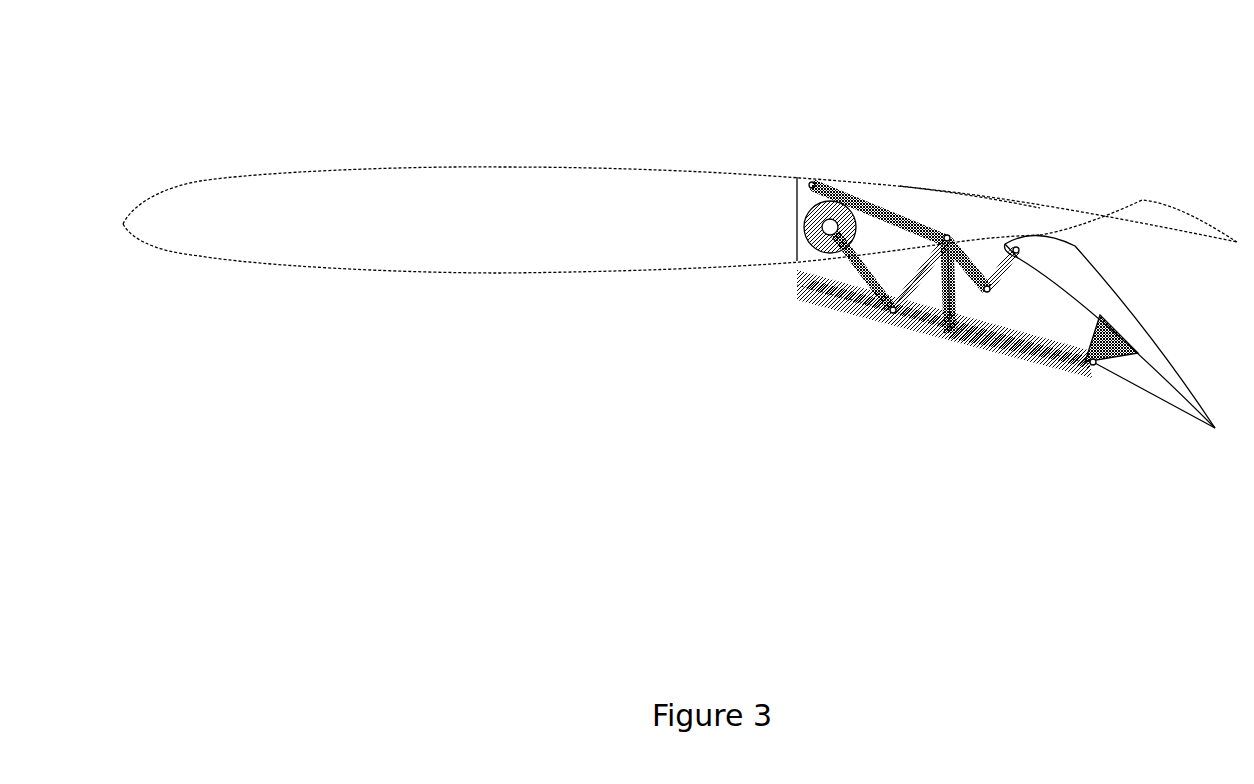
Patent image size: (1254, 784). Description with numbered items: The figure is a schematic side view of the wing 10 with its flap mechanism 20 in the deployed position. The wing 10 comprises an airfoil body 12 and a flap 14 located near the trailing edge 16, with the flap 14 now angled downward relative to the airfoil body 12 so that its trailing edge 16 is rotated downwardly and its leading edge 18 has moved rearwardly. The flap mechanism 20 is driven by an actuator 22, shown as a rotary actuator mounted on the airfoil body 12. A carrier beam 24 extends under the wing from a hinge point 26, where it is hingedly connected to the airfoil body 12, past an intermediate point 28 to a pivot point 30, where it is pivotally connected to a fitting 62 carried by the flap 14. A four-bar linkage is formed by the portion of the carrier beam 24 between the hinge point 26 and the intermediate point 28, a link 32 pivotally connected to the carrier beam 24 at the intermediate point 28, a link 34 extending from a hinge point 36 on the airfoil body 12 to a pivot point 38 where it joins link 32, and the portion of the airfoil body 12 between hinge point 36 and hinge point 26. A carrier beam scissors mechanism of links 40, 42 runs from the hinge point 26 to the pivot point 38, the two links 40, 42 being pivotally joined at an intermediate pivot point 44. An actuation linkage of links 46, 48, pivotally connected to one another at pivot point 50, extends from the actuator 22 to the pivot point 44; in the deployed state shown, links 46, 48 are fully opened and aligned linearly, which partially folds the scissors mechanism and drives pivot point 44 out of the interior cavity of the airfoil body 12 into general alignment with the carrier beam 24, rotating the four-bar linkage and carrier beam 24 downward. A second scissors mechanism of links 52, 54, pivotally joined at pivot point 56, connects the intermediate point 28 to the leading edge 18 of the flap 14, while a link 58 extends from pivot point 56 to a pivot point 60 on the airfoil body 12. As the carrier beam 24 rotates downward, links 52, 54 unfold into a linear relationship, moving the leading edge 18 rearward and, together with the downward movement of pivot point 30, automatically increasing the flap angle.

The wing 10 is at (692, 80).
The airfoil body 12 is at (393, 183).
The flap 14 is at (1107, 308).
The trailing edge 16 is at (1215, 428).
The leading edge 18 is at (1142, 199).
The flap mechanism 20 is at (943, 194).
The actuator 22 is at (822, 234).
The carrier beam 24 is at (1017, 353).
The hinge point 26 is at (812, 283).
The intermediate point 28 is at (952, 295).
The pivot point 30 is at (1095, 364).
The link 32 is at (943, 295).
The link 34 is at (853, 193).
The hinge point 36 is at (805, 180).
The pivot point 38 is at (950, 238).
The link 40 is at (850, 290).
The link 42 is at (917, 282).
The intermediate pivot point 44 is at (889, 316).
The link 46 is at (820, 262).
The link 48 is at (868, 258).
The pivot point 50 is at (872, 208).
The link 52 is at (981, 318).
The link 54 is at (1020, 259).
The pivot point 56 is at (988, 292).
The link 58 is at (1018, 250).
The pivot point 60 is at (950, 240).
The fitting 62 is at (1110, 362).